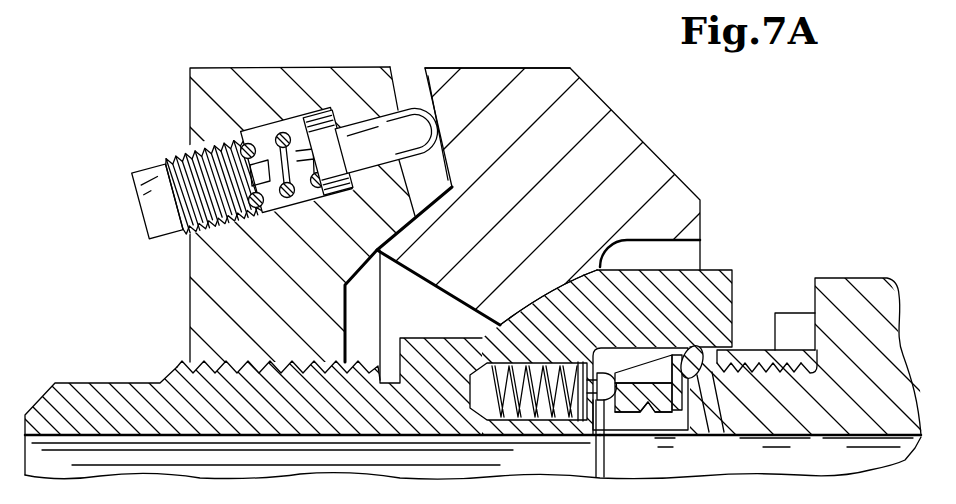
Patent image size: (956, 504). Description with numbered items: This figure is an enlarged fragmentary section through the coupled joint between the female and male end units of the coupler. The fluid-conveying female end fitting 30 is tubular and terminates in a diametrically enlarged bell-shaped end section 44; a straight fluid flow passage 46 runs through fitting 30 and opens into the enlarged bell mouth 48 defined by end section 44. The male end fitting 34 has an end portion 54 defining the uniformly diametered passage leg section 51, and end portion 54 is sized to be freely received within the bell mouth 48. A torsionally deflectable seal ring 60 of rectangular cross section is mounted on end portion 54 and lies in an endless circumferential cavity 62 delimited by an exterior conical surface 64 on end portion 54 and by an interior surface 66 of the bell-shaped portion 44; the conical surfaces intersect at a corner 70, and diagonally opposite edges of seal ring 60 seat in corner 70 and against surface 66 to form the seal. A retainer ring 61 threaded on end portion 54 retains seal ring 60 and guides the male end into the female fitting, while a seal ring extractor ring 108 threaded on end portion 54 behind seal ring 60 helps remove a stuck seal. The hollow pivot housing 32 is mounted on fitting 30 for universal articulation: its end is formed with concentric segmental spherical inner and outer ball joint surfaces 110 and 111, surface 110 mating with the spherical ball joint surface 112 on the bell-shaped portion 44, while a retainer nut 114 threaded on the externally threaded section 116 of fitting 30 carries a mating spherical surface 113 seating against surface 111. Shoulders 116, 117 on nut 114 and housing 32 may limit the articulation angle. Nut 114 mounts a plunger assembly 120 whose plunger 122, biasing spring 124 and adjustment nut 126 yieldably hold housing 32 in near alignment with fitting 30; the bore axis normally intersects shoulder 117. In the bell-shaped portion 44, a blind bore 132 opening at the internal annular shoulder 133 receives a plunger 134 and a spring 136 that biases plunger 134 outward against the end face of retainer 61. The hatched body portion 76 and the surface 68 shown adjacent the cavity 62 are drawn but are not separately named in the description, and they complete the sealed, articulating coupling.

The female end fitting 30 is at (90, 380).
The pivot housing 32 is at (528, 62).
The male end fitting 34 is at (850, 290).
The bell-shaped end section 44 is at (712, 269).
The fluid flow passage 46 is at (50, 438).
The bell mouth 48 is at (621, 362).
The leg section of fluid flow passage 51 is at (811, 437).
The male end portion 54 is at (645, 428).
The seal ring 60 is at (684, 341).
The retainer ring 61 is at (618, 342).
The cavity 62 is at (736, 332).
The exterior conical surface 64 is at (680, 415).
The interior surface 66 is at (720, 373).
The rack tooth 68 is at (763, 375).
The corner 70 is at (710, 400).
The pivot block 76 is at (594, 105).
The seal ring extractor ring 108 is at (781, 312).
The inner ball joint surface 110 is at (560, 290).
The outer ball joint surface 111 is at (410, 214).
The ball joint surface 112 is at (544, 293).
The ball joint surface 113 is at (394, 238).
The retainer nut 114 is at (256, 68).
The externally threaded section 116 is at (421, 76).
The shoulder 117 is at (398, 72).
The plunger assembly 120 is at (335, 110).
The plunger 122 is at (418, 126).
The biasing spring 124 is at (289, 198).
The adjustment nut 126 is at (142, 208).
The blind bore 132 is at (488, 331).
The shoulder 133 is at (593, 437).
The plunger 134 is at (605, 477).
The spring 136 is at (508, 414).